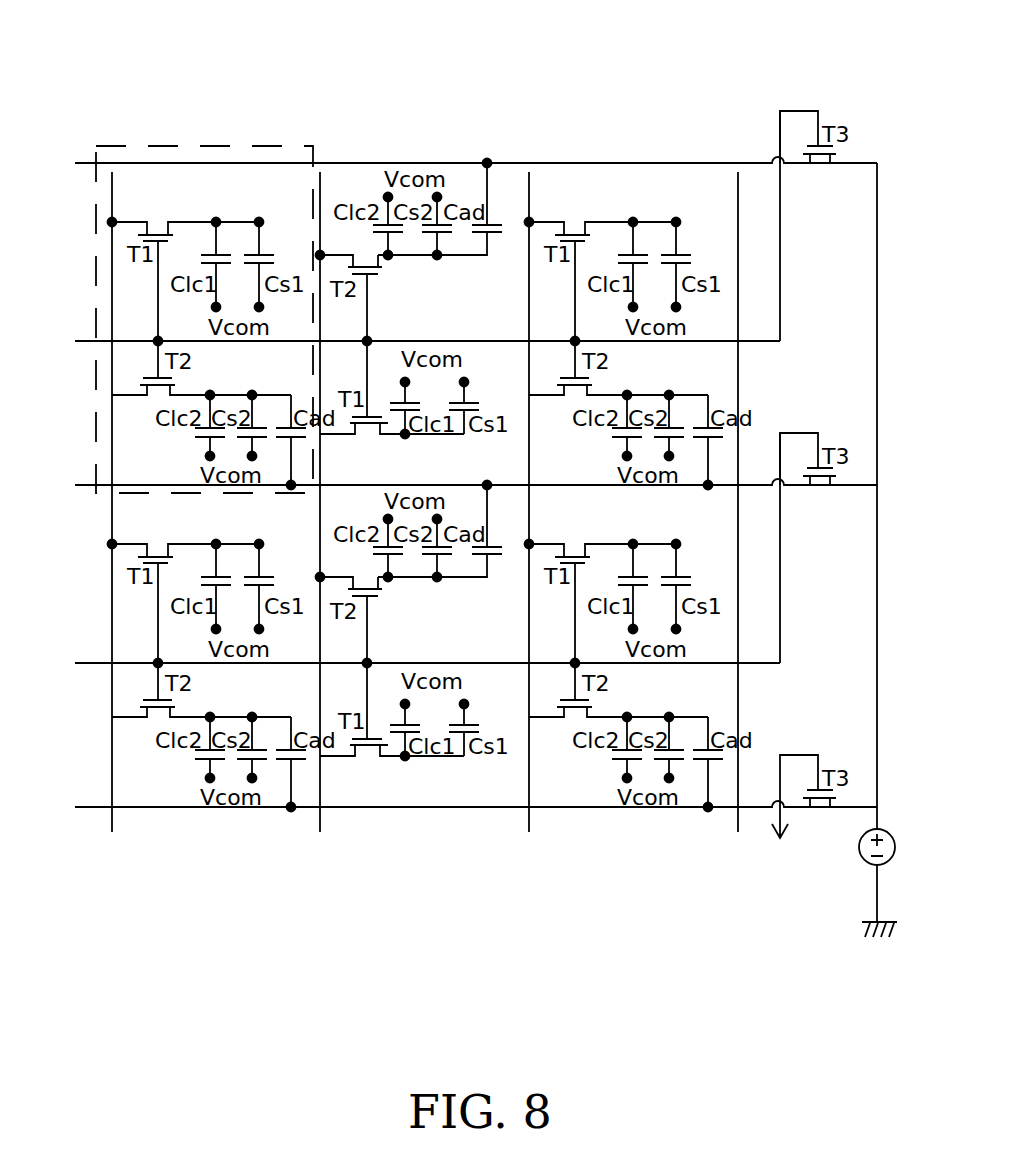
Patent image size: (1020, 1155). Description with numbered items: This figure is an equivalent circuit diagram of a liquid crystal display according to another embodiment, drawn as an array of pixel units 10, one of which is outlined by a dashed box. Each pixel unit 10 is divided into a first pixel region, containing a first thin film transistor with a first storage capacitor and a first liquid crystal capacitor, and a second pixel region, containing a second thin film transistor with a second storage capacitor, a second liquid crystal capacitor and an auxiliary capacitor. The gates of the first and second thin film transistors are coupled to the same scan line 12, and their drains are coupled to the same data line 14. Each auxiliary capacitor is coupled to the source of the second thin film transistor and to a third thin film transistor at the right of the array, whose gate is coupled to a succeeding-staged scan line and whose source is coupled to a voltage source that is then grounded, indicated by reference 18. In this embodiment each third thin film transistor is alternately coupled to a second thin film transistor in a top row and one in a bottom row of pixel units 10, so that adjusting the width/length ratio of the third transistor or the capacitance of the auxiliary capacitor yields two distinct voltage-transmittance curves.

The pixel unit 10 is at (231, 138).
The scan line 12 is at (97, 341).
The data line 14 is at (110, 458).
The voltage source 18 is at (858, 848).